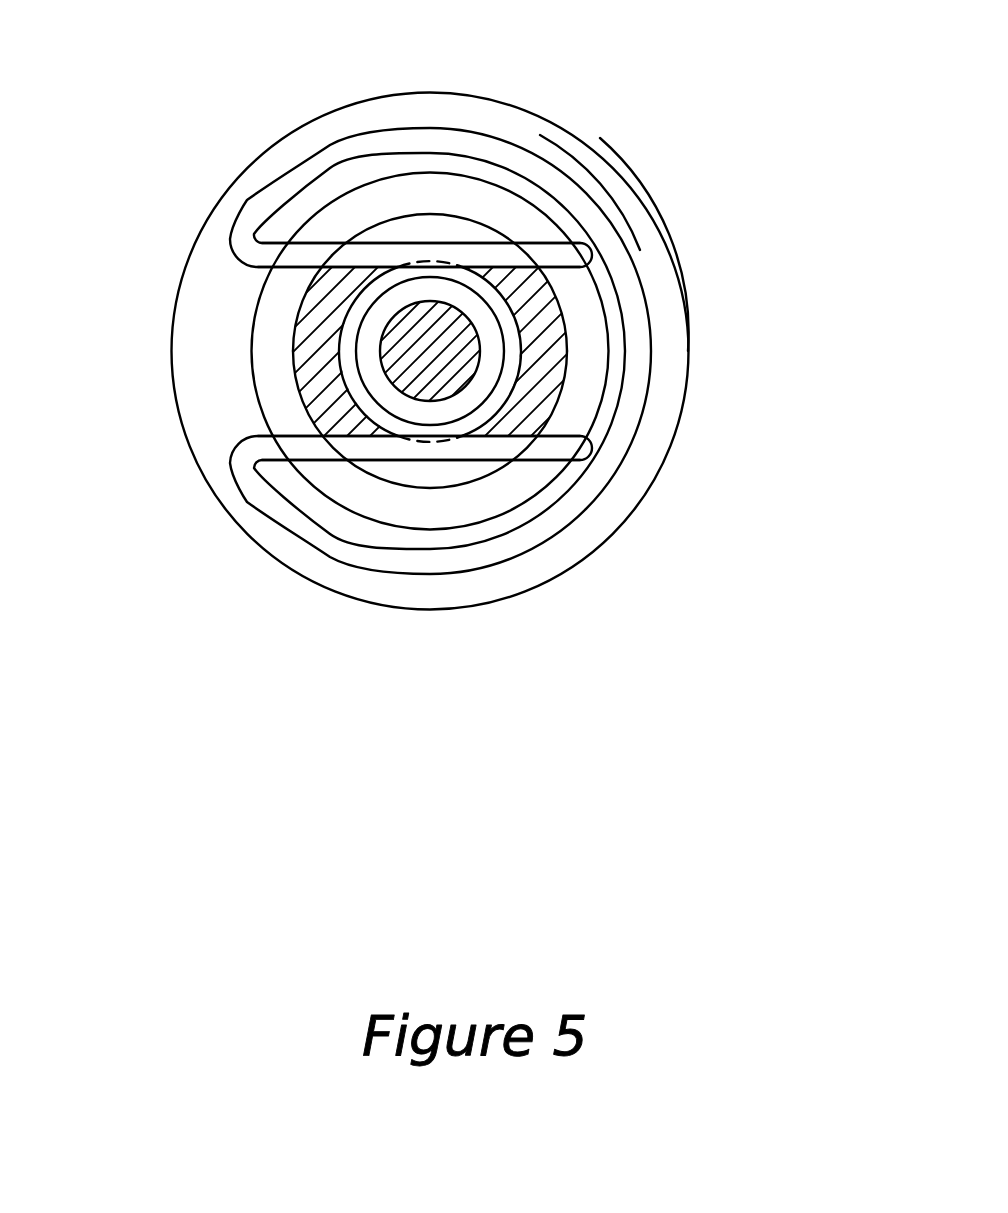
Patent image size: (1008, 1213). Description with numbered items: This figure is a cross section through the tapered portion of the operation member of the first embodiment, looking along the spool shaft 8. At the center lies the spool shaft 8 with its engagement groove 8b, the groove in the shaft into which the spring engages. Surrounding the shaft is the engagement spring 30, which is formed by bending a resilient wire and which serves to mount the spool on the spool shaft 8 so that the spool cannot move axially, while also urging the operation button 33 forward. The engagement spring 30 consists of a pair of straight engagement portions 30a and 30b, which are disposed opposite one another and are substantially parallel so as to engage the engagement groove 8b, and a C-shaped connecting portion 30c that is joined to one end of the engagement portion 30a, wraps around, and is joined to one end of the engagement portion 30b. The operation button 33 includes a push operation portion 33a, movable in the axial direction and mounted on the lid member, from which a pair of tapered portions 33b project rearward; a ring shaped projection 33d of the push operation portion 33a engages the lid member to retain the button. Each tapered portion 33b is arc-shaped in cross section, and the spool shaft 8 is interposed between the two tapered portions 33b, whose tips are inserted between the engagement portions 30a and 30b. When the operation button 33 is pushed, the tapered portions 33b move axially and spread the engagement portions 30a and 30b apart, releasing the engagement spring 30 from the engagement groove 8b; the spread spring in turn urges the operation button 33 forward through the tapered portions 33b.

The engagement spring 30 is at (525, 155).
The engagement portion 30a is at (378, 258).
The engagement portion 30b is at (368, 445).
The C-shaped connecting portion 30c is at (572, 498).
The operation button 33 is at (628, 167).
The push operation portion 33a is at (657, 212).
The tapered portions 33b is at (513, 270).
The ring shaped projection 33d is at (673, 287).
The spool shaft 8 is at (473, 360).
The engagement groove 8b is at (480, 340).